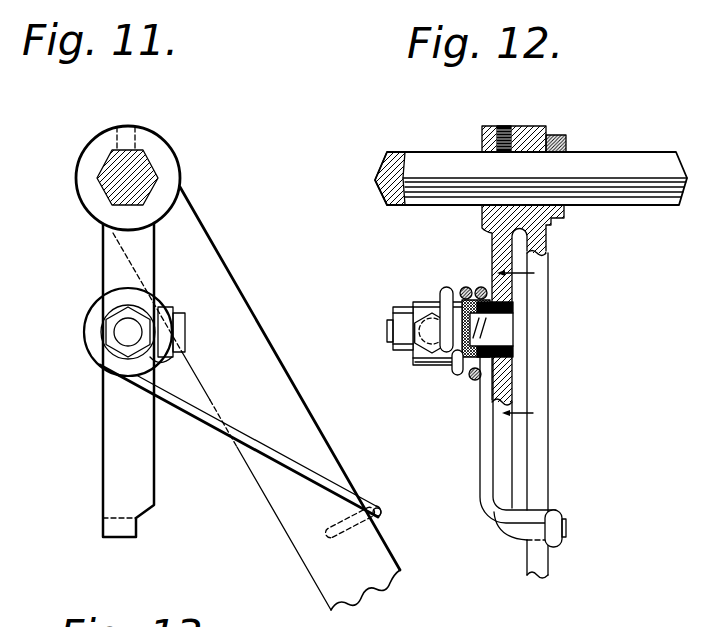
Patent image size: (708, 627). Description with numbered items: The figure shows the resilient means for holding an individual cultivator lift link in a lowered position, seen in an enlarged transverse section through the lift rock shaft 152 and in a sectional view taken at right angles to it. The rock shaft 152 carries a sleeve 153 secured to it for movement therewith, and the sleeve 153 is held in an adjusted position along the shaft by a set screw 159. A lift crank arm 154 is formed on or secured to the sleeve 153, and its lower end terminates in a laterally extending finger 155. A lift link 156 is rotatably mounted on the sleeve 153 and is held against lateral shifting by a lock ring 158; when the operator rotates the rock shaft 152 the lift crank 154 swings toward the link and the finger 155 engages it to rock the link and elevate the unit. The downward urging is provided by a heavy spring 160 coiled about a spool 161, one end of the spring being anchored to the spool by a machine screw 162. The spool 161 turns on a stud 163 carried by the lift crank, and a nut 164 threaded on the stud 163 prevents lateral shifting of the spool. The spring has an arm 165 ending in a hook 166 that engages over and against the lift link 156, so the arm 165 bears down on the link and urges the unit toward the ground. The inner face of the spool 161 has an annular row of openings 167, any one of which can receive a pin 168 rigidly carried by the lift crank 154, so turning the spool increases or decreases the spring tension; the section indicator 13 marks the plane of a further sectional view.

In FIG. 11, the lift rock shaft 152 is at (110, 178).
In FIG. 12, the lift rock shaft 152 is at (607, 165).
In FIG. 12, the sleeve 153 is at (567, 142).
In FIG. 11, the lift crank arm 154 is at (103, 394).
In FIG. 12, the lift crank arm 154 is at (492, 241).
In FIG. 11, the laterally extending finger 155 is at (128, 524).
In FIG. 12, the laterally extending finger 155 is at (567, 526).
In FIG. 11, the lift link 156 is at (272, 365).
In FIG. 12, the lift link 156 is at (541, 362).
In FIG. 12, the lock ring 158 is at (552, 136).
In FIG. 11, the set screw 159 is at (136, 134).
In FIG. 12, the set screw 159 is at (506, 127).
In FIG. 11, the heavy spring 160 is at (84, 333).
In FIG. 12, the heavy spring 160 is at (444, 281).
In FIG. 11, the spool 161 is at (157, 358).
In FIG. 12, the spool 161 is at (432, 363).
In FIG. 11, the machine screw 162 is at (187, 333).
In FIG. 12, the machine screw 162 is at (409, 358).
In FIG. 11, the stud 163 is at (128, 332).
In FIG. 12, the stud 163 is at (518, 331).
In FIG. 11, the nut 164 is at (103, 306).
In FIG. 12, the nut 164 is at (399, 312).
In FIG. 11, the arm 165 is at (327, 488).
In FIG. 12, the arm 165 is at (480, 456).
In FIG. 11, the hook 166 is at (381, 512).
In FIG. 12, the hook 166 is at (559, 513).
In FIG. 12, the openings 167 is at (478, 379).
In FIG. 12, the pin 168 is at (513, 300).
In FIG. 12, the section line 13- 13 is at (498, 343).